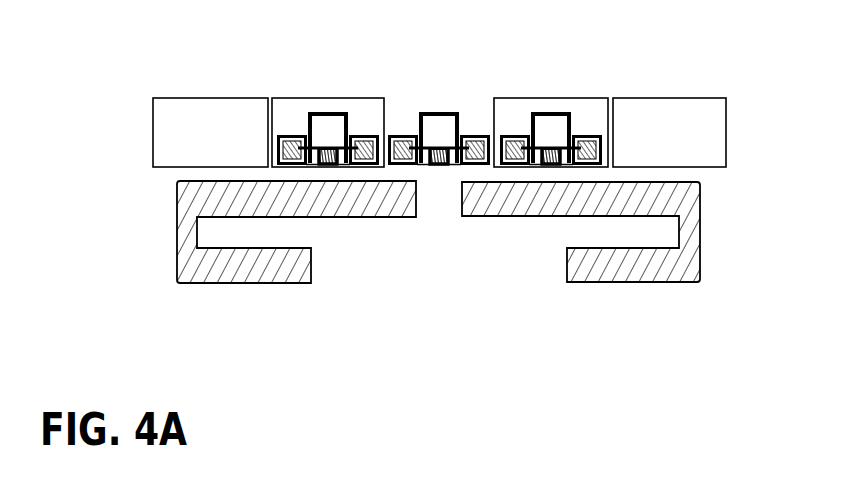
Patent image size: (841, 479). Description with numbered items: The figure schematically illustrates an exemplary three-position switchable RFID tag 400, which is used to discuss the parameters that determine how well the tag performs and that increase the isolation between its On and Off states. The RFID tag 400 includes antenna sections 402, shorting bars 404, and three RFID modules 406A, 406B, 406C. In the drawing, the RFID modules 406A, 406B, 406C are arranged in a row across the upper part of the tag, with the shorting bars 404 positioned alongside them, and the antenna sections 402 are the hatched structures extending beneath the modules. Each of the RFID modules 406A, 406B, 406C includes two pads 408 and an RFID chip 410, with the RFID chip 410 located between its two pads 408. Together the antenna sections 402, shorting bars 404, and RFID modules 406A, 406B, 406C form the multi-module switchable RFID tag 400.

The three-position switchable RFID tag 400 is at (734, 91).
The antenna sections 402 is at (270, 287).
The shorting bars 404 is at (183, 113).
The RFID module 406A is at (532, 87).
The RFID module 406B is at (439, 105).
The RFID module 406C is at (328, 87).
The pads 408 is at (507, 166).
The RFID chip 410 is at (330, 165).